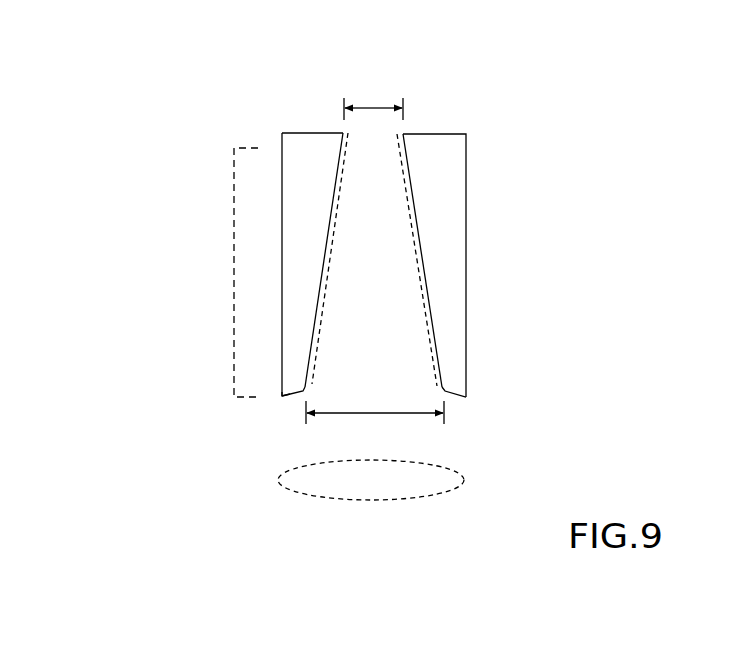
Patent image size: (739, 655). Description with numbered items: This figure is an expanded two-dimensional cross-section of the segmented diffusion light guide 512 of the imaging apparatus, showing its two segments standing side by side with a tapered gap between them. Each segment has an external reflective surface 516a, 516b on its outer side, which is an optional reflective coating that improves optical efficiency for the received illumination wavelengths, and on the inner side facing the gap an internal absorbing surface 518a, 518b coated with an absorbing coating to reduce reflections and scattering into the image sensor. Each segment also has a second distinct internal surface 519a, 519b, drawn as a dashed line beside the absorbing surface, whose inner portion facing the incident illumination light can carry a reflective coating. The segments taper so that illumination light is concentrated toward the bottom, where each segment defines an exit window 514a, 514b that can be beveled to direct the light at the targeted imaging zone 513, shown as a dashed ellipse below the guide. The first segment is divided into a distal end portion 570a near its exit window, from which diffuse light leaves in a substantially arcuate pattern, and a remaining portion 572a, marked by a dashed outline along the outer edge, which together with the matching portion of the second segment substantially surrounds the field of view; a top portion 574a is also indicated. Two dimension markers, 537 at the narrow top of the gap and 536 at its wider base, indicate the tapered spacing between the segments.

The segmented diffusion light guide 512 is at (80, 84).
The targeted imaging zone 513 is at (338, 505).
The exit window 514a is at (279, 403).
The exit window 514b is at (463, 399).
The external reflective surface 516a is at (279, 212).
The external reflective surface 516b is at (467, 285).
The internal absorbing surface 518a is at (341, 167).
The internal absorbing surface 518b is at (421, 268).
The internal surface 519a is at (327, 196).
The second face reference line 519b is at (421, 237).
The lower gap width 536 is at (414, 418).
The upper gap width 537 is at (378, 98).
The distal end portion 570a is at (279, 390).
The remaining portion 572a is at (233, 257).
The top portion 574a is at (279, 134).